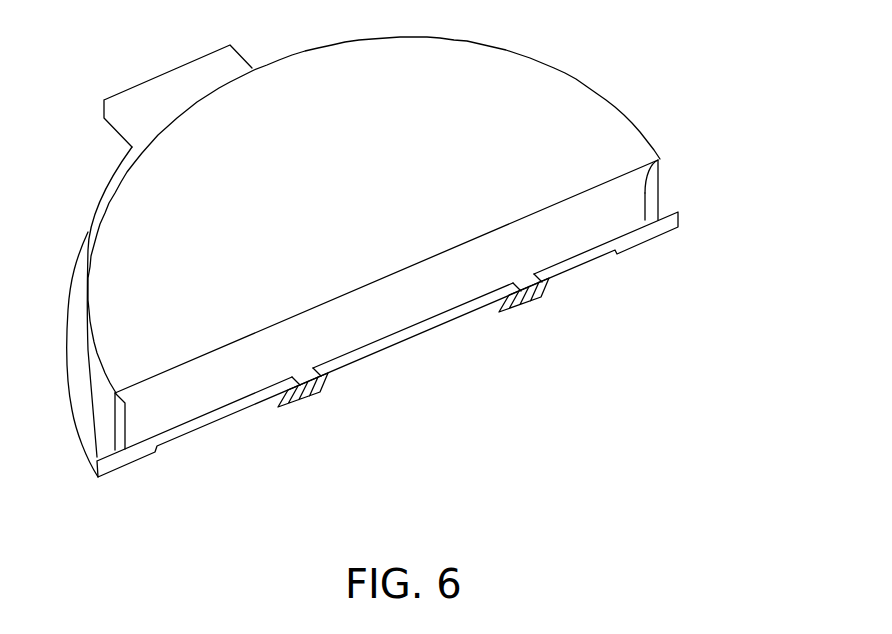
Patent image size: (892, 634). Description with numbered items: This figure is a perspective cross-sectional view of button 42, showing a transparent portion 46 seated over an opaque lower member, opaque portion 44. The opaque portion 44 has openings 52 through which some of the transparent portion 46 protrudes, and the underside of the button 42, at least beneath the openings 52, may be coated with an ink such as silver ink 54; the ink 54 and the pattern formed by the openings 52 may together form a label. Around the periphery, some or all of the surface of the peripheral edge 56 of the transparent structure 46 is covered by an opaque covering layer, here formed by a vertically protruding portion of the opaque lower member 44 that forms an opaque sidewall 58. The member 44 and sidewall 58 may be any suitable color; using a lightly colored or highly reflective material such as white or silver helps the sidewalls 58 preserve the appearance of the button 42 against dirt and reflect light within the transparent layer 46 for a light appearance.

The button 42 is at (762, 75).
The opaque portion 44 is at (558, 272).
The transparent portion 46 is at (607, 197).
The openings 52 is at (300, 364).
The silver ink 54 is at (307, 395).
The peripheral edge 56 is at (638, 176).
The opaque sidewall 58 is at (655, 192).